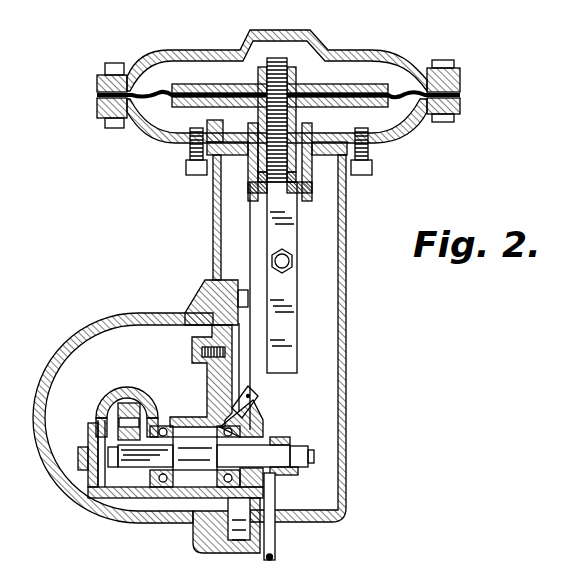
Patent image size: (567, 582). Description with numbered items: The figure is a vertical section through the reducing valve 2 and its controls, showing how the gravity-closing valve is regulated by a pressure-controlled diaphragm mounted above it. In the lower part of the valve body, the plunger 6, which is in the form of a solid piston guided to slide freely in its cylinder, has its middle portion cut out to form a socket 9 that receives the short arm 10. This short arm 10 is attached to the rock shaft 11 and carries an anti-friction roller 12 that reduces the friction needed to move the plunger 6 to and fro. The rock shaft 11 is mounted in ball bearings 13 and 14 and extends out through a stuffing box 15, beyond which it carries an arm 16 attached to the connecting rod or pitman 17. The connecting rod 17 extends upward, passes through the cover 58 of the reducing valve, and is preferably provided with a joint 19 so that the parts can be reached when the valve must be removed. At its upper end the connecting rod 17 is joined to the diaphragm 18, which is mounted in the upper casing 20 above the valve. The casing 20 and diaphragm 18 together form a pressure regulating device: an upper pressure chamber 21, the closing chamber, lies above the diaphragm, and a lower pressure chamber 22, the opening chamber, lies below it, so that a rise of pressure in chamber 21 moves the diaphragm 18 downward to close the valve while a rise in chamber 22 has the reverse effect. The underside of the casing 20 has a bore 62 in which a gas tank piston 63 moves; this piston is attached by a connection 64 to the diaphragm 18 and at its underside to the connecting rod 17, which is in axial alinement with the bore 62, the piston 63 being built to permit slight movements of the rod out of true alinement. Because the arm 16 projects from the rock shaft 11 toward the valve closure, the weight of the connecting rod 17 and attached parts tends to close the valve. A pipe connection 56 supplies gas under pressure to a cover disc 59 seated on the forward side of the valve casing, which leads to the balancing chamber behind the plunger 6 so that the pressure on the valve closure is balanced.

The reducing valve 2 is at (100, 314).
The plunger 6 is at (96, 402).
The socket 9 is at (128, 390).
The short arm 10 is at (140, 410).
The rock shaft 11 is at (190, 445).
The anti-friction roller 12 is at (128, 402).
The ball bearing 13 is at (163, 484).
The ball bearing 14 is at (200, 495).
The stuffing box 15 is at (255, 412).
The arm 16 is at (292, 445).
The connecting rod 17 is at (290, 215).
The diaphragm 18 is at (346, 88).
The joint 19 is at (289, 250).
The upper casing 20 is at (372, 54).
The upper pressure chamber 21 is at (212, 68).
The lower pressure chamber 22 is at (165, 124).
The pipe connection 56 is at (276, 548).
The cover 58 is at (346, 252).
The cover disc 59 is at (200, 332).
The bore 62 is at (248, 158).
The gas tank piston 63 is at (248, 180).
The connection 64 is at (296, 126).